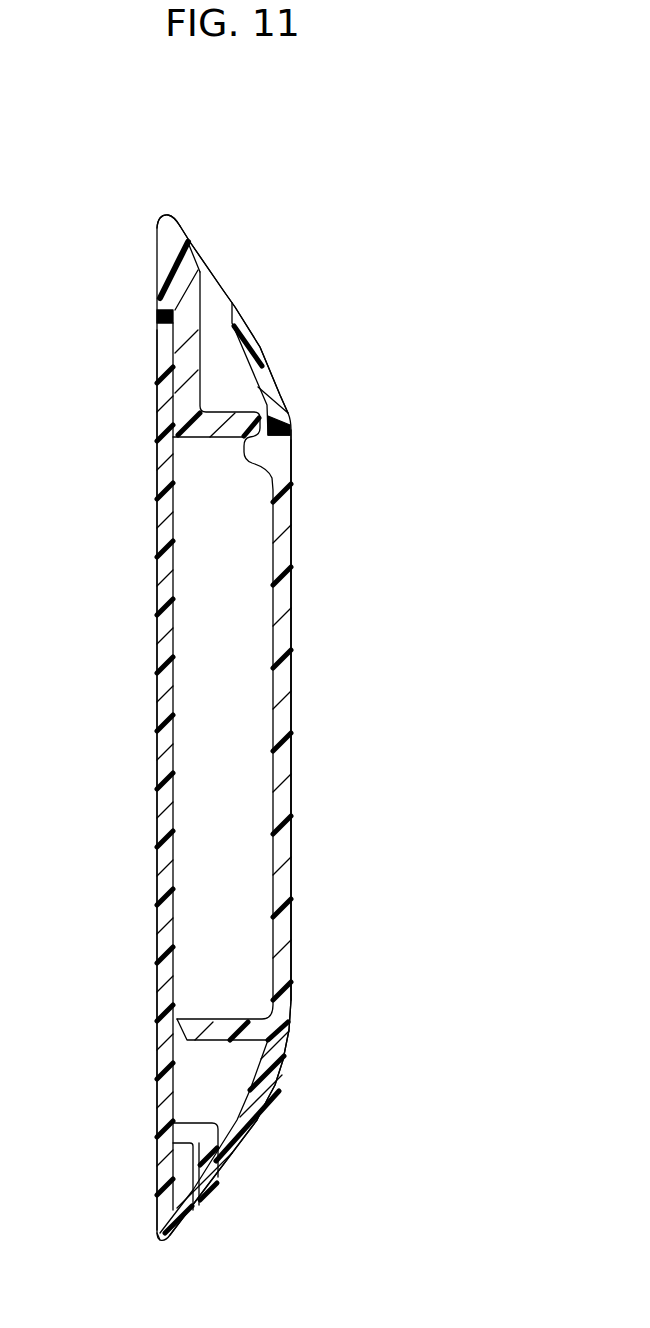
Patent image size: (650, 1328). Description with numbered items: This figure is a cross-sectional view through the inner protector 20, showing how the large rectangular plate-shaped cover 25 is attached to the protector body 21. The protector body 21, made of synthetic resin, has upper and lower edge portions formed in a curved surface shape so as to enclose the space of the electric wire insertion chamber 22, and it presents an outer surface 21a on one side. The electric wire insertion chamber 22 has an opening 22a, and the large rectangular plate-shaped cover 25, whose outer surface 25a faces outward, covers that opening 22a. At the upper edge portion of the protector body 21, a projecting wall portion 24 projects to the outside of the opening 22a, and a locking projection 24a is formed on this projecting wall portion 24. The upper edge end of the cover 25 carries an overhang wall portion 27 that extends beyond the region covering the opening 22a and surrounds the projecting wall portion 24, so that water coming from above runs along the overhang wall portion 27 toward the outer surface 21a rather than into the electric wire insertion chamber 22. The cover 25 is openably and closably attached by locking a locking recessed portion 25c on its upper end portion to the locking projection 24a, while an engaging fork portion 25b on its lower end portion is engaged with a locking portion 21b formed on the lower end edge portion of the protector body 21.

The inner protector 20 is at (432, 590).
The protector body 21 is at (305, 622).
The outer surface 21a is at (292, 732).
The locking portion 21b is at (193, 1175).
The electric wire insertion chamber 22 is at (240, 525).
The opening 22a is at (190, 452).
The projecting wall portion 24 is at (200, 323).
The locking projection 24a is at (172, 277).
The large rectangular plate-shaped cover 25 is at (146, 812).
The outer surface 25a is at (158, 718).
The engaging fork portion 25b is at (158, 1152).
The locking recessed portion 25c is at (157, 312).
The overhang wall portion 27 is at (276, 367).